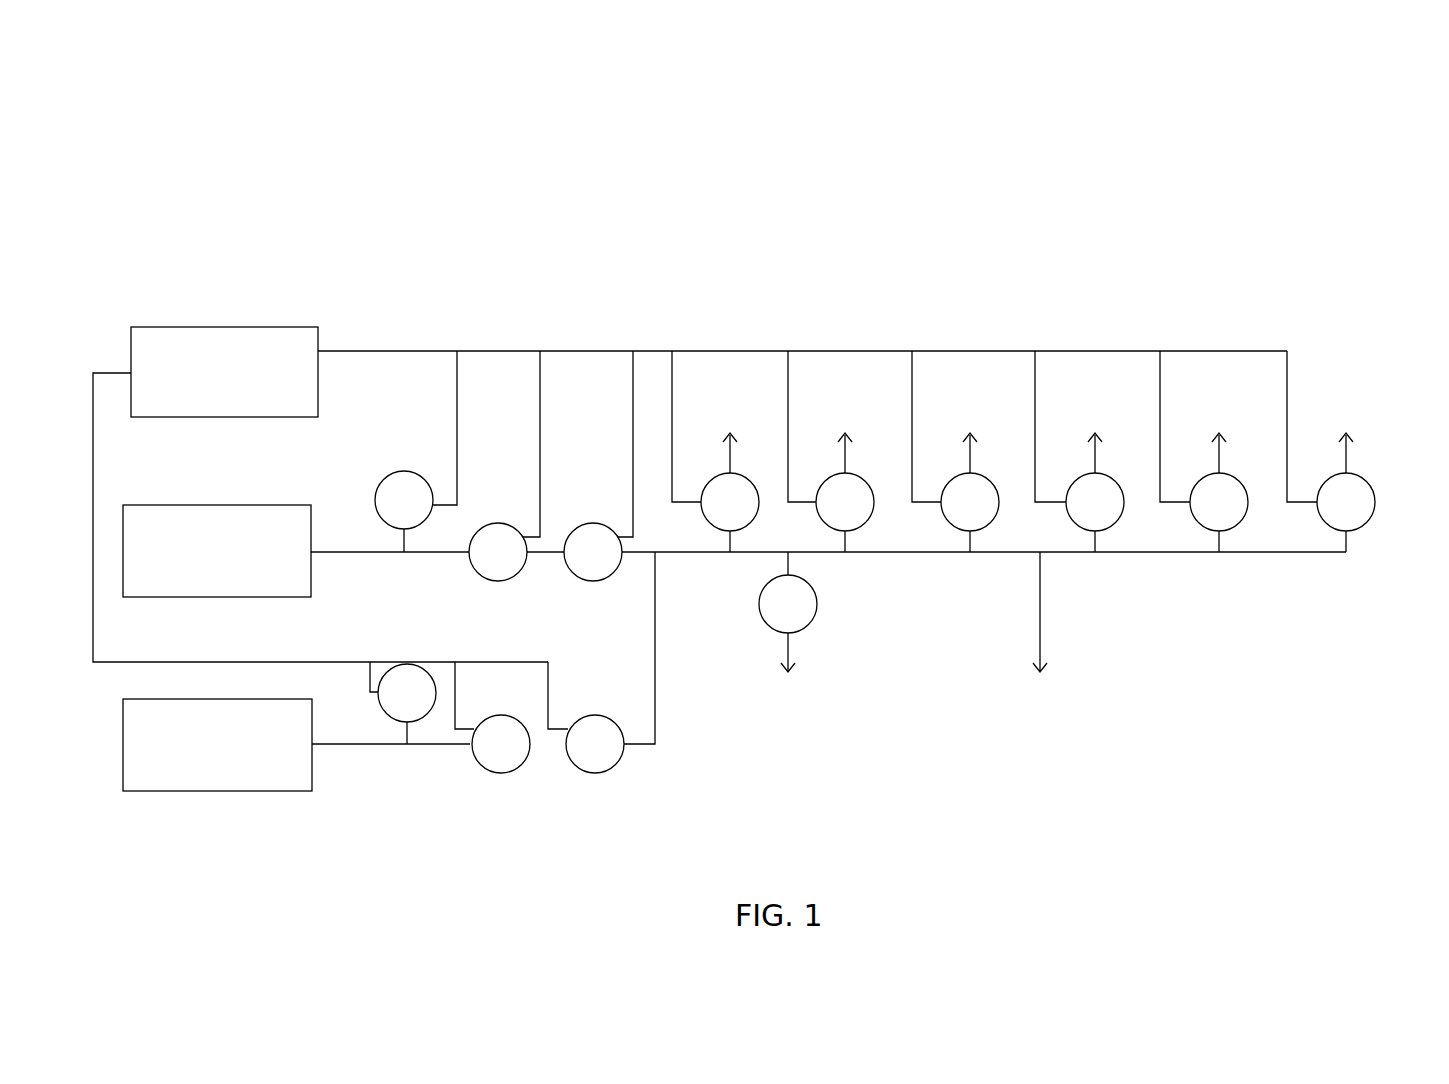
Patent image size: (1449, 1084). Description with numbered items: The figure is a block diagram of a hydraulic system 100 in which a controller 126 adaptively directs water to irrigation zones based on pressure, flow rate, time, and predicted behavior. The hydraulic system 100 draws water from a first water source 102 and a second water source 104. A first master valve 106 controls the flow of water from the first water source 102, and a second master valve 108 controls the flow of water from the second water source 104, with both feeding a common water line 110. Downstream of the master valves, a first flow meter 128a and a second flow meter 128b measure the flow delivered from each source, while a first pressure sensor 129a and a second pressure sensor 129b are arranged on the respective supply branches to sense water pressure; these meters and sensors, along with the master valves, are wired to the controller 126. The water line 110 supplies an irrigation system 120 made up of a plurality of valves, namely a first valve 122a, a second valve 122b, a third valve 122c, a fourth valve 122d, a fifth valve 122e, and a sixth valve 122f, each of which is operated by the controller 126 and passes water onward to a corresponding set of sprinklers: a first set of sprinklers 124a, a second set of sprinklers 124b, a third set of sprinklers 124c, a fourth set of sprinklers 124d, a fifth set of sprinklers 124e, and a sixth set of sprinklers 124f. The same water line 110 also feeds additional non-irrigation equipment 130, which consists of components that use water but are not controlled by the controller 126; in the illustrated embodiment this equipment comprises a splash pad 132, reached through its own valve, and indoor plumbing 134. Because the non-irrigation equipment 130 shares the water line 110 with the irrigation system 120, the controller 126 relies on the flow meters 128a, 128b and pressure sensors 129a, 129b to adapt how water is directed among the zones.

The hydraulic system 100 is at (1360, 130).
The first water source 102 is at (215, 505).
The second water source 104 is at (278, 791).
The first master valve 106 is at (494, 581).
The second master valve 108 is at (498, 773).
The water line 110 is at (673, 555).
The irrigation system 120 is at (938, 252).
The first valve 122a is at (752, 521).
The second valve 122b is at (867, 521).
The third valve 122c is at (992, 521).
The fourth valve 122d is at (1117, 521).
The fifth valve 122e is at (1241, 521).
The sixth valve 122f is at (1368, 521).
The first set of sprinklers 124a is at (746, 372).
The second set of sprinklers 124b is at (873, 374).
The third set of sprinklers 124c is at (993, 376).
The fourth set of sprinklers 124d is at (1120, 380).
The fifth set of sprinklers 124e is at (1245, 380).
The sixth set of sprinklers 124f is at (1346, 370).
The controller 126 is at (218, 327).
The first flow meter 128a is at (588, 581).
The second flow meter 128b is at (592, 773).
The first pressure sensor 129a is at (377, 492).
The second pressure sensor 129b is at (380, 683).
The additional non-irrigation equipment 130 is at (1023, 808).
The splash pad 132 is at (807, 740).
The indoor plumbing 134 is at (1056, 740).